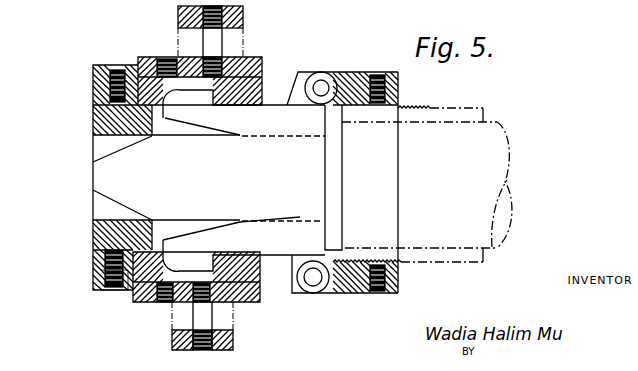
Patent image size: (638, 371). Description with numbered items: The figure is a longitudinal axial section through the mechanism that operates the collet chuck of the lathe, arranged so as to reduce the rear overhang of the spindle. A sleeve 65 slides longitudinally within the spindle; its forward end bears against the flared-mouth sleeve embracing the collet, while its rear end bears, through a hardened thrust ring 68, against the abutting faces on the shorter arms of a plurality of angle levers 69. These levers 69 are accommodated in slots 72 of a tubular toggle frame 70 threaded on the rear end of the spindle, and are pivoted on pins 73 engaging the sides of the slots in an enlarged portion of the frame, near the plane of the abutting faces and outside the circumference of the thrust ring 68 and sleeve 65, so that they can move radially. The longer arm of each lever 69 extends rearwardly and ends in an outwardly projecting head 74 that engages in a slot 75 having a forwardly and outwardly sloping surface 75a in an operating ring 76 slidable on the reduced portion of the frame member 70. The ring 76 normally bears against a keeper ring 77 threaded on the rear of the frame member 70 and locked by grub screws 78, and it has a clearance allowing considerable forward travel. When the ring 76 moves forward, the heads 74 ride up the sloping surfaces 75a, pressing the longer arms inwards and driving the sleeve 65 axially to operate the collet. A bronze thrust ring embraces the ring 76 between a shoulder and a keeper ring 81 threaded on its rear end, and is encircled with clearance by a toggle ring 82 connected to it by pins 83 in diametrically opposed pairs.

The sleeve 65 is at (463, 215).
The hardened thrust ring 68 is at (380, 295).
The angle lever 69 is at (285, 238).
The tubular toggle frame 70 is at (353, 293).
The slot 72 is at (93, 190).
The pin 73 is at (321, 84).
The head 74 is at (135, 116).
The slot 75 is at (263, 58).
The sloping surface 75a is at (143, 68).
The operating ring 76 is at (140, 280).
The keeper ring 77 is at (100, 262).
The grub screw 78 is at (98, 277).
The keeper ring 81 is at (163, 283).
The toggle ring 82 is at (172, 335).
The pin 83 is at (233, 338).